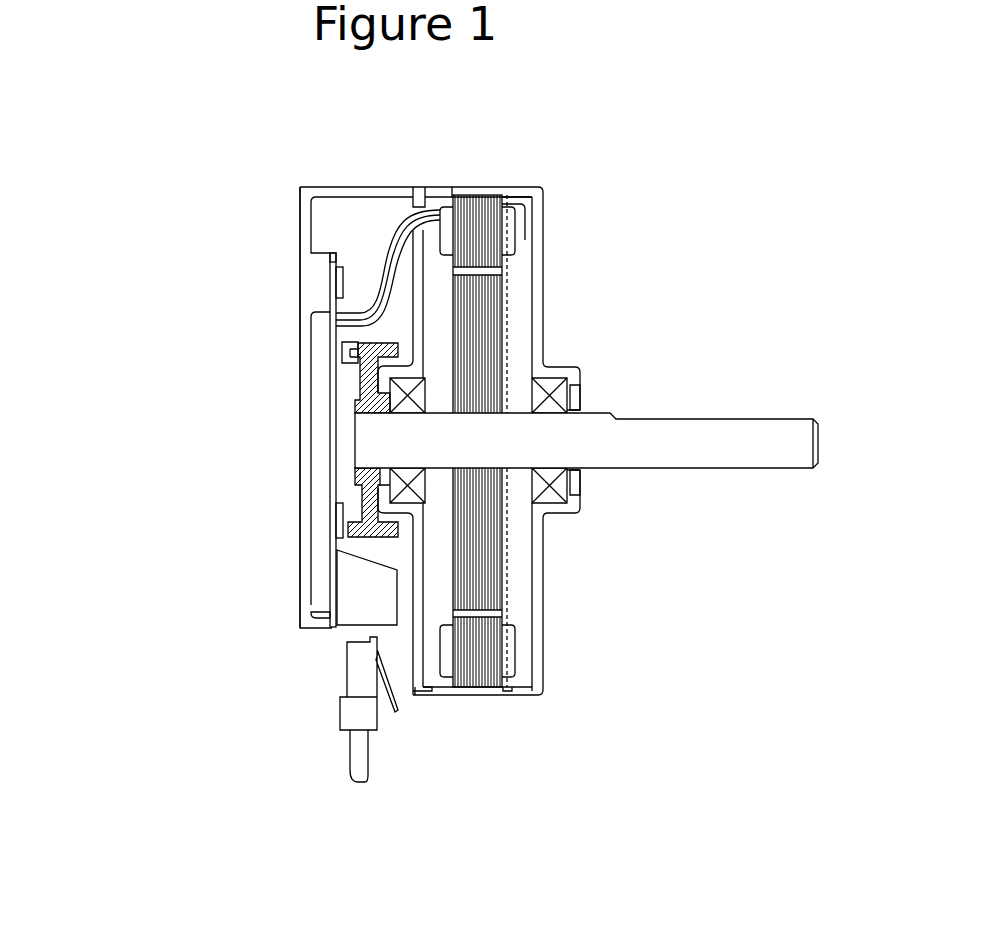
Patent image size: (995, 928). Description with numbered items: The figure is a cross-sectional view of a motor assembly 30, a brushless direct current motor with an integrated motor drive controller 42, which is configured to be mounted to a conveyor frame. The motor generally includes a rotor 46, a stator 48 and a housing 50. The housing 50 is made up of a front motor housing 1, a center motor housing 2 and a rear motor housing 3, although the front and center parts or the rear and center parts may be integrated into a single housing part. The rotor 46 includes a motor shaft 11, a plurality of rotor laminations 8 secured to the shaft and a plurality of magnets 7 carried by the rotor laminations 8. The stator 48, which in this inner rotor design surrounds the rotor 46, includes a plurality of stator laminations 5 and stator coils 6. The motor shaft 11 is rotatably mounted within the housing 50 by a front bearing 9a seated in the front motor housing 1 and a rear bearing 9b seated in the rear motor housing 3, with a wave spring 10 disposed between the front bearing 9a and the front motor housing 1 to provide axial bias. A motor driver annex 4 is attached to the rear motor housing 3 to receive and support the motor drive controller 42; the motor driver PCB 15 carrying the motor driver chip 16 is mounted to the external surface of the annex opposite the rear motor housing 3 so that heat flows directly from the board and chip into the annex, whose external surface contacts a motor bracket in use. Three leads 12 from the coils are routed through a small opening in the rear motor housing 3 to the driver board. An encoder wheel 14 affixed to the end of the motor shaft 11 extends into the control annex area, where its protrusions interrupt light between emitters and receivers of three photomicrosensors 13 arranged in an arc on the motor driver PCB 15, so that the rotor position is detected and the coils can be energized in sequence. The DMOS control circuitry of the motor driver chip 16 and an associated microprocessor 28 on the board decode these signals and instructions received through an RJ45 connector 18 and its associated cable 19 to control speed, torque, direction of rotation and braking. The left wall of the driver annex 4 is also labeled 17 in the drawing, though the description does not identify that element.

The front motor housing 1 is at (540, 185).
The center motor housing 2 is at (487, 187).
The rear motor housing 3 is at (437, 187).
The motor driver annex 4 is at (353, 190).
The stator laminations 5 is at (507, 202).
The stator coils 6 is at (518, 232).
The magnets 7 is at (507, 271).
The rotor laminations 8 is at (503, 345).
The front bearing 9a is at (572, 397).
The rear bearing 9b is at (387, 494).
The wave spring 10 is at (572, 497).
The motor shaft 11 is at (815, 480).
The leads 12 is at (330, 320).
The photomicrosensors 13 is at (330, 343).
The encoder wheel 14 is at (357, 377).
The motor driver PCB 15 is at (325, 423).
The motor driver chip 16 is at (330, 292).
The housing wall 17 is at (313, 267).
The RJ45 connector 18 is at (333, 587).
The Cat5/Cat6 cable 19 is at (347, 677).
The microprocessor 28 is at (330, 529).
The motor assembly 30 is at (595, 178).
The motor drive controller 42 is at (331, 250).
The rotor 46 is at (507, 313).
The stator 48 is at (518, 654).
The housing 50 is at (442, 697).